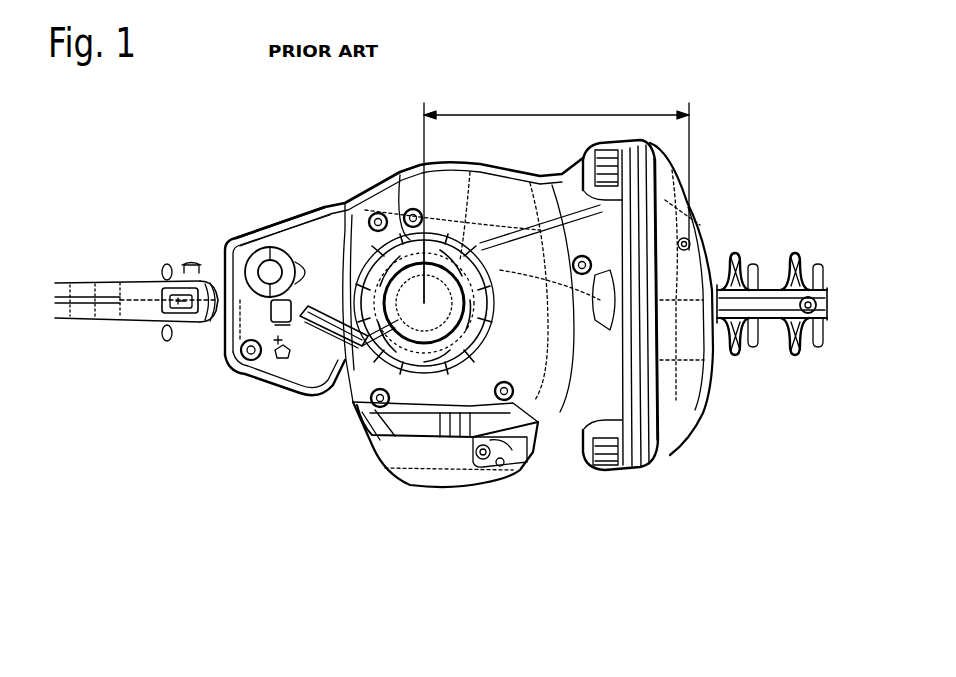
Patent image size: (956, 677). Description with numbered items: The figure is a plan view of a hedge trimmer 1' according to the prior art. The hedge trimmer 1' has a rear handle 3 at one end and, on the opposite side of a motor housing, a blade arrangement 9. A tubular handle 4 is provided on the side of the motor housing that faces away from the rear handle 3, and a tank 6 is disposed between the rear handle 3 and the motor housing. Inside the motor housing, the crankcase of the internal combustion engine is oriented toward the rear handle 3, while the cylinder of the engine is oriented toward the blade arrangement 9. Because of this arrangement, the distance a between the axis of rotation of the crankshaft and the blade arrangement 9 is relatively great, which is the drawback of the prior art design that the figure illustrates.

The hedge trimmer 1' is at (472, 298).
The rear handle 3 is at (141, 292).
The tubular handle 4 is at (644, 428).
The tank 6 is at (278, 366).
The blade arrangement 9 is at (762, 230).
The distance a is at (556, 196).